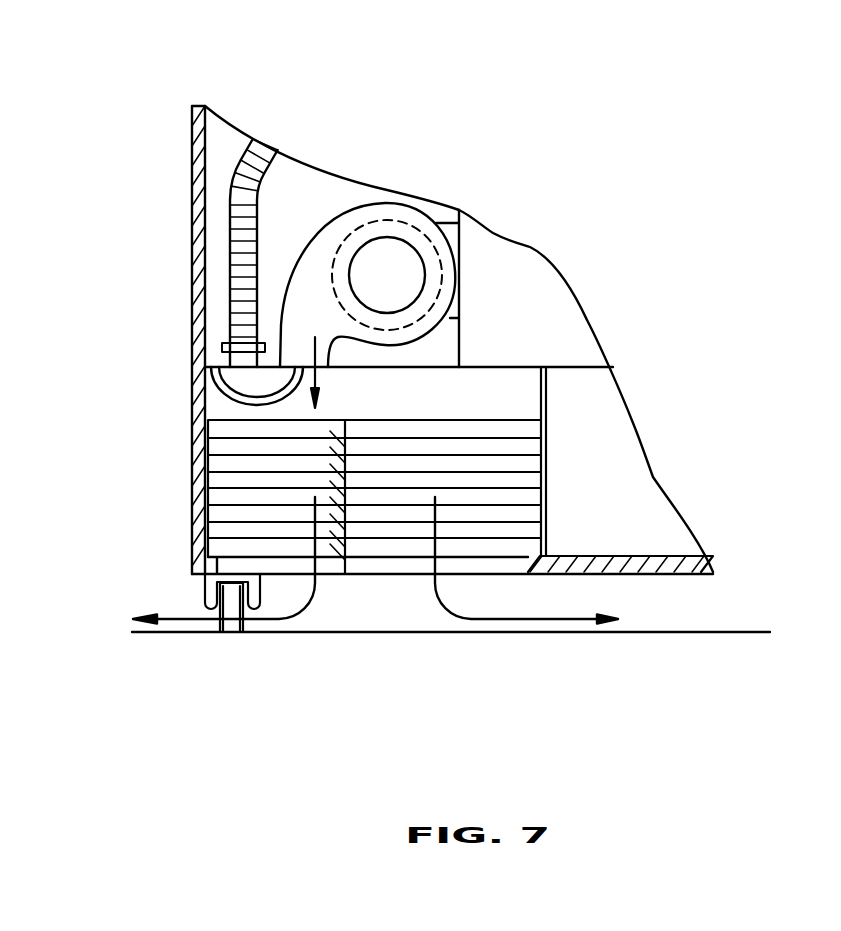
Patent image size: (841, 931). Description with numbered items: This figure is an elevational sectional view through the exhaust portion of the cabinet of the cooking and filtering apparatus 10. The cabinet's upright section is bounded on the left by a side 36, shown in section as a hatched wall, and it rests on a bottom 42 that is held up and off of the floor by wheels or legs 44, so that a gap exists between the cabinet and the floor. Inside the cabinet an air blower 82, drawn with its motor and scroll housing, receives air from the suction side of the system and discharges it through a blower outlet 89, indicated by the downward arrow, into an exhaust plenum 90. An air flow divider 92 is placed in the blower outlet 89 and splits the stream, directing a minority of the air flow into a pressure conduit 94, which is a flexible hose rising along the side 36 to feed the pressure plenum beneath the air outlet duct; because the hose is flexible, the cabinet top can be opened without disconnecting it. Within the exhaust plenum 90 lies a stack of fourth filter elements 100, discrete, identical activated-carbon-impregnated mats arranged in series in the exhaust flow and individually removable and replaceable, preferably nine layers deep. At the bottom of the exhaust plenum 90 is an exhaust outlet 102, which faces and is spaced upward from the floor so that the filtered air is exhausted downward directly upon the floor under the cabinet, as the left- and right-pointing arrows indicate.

The air handling apparatus 10 is at (660, 113).
The side 36 is at (192, 268).
The bottom 42 is at (663, 570).
The legs 44 is at (232, 627).
The air blower 82 is at (393, 218).
The blower outlet 89 is at (320, 363).
The exhaust plenum 90 is at (550, 480).
The air flow divider 92 is at (248, 383).
The pressure conduit 94 is at (243, 182).
The fourth filter elements 100 is at (345, 574).
The exhaust outlet 102 is at (375, 565).